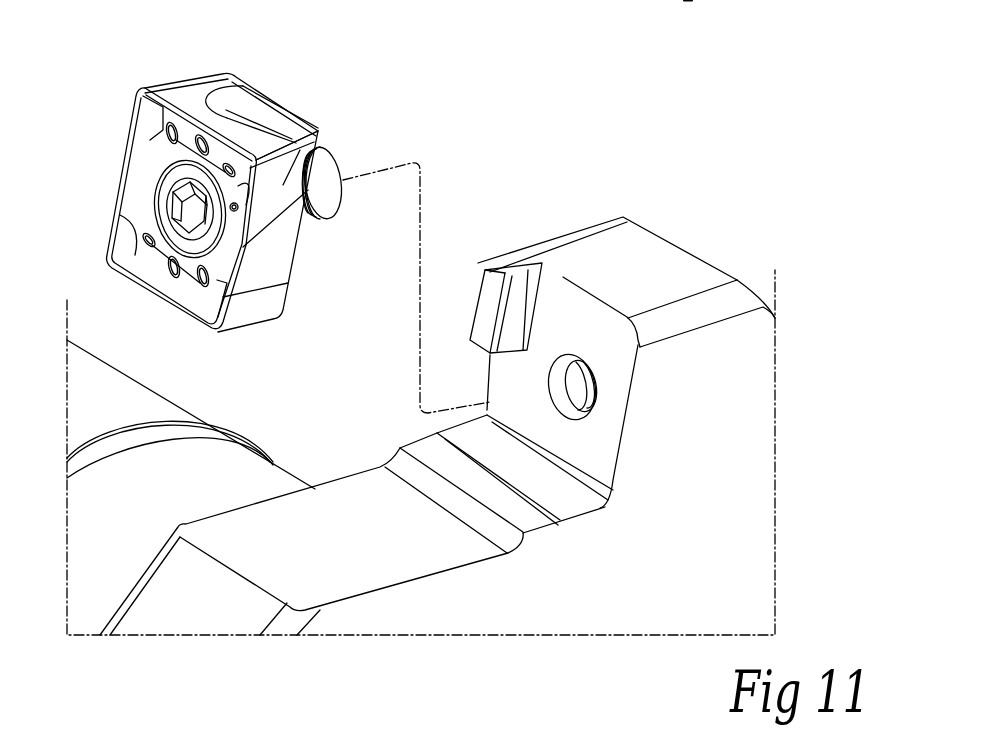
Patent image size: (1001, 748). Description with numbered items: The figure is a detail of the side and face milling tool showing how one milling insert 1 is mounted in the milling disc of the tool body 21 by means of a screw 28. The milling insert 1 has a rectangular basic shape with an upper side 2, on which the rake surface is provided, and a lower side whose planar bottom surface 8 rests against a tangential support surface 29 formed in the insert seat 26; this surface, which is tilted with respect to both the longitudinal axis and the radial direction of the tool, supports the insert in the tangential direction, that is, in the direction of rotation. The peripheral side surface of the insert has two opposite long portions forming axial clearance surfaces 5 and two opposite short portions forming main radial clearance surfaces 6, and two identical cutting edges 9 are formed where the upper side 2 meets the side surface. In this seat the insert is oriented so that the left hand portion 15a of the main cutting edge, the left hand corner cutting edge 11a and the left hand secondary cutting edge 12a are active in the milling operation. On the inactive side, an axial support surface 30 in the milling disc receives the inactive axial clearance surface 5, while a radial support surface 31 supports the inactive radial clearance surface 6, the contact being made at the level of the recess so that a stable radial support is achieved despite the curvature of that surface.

The milling insert 1 is at (280, 70).
The upper side 2 is at (256, 195).
The axial clearance surface 5 is at (280, 278).
The main radial clearance surface 6 is at (182, 92).
The bottom surface 8 is at (288, 283).
The cutting edge 9 is at (204, 135).
The corner cutting edge 11a is at (257, 150).
The secondary cutting edge 12a is at (260, 188).
The left hand portion of the main cutting edge 15a is at (278, 113).
The tool body 21 is at (737, 355).
The insert seat 26 is at (617, 363).
The screw 28 is at (327, 160).
The tangential support surface 29 is at (588, 339).
The axial support surface 30 is at (520, 293).
The radial support surface 31 is at (556, 493).